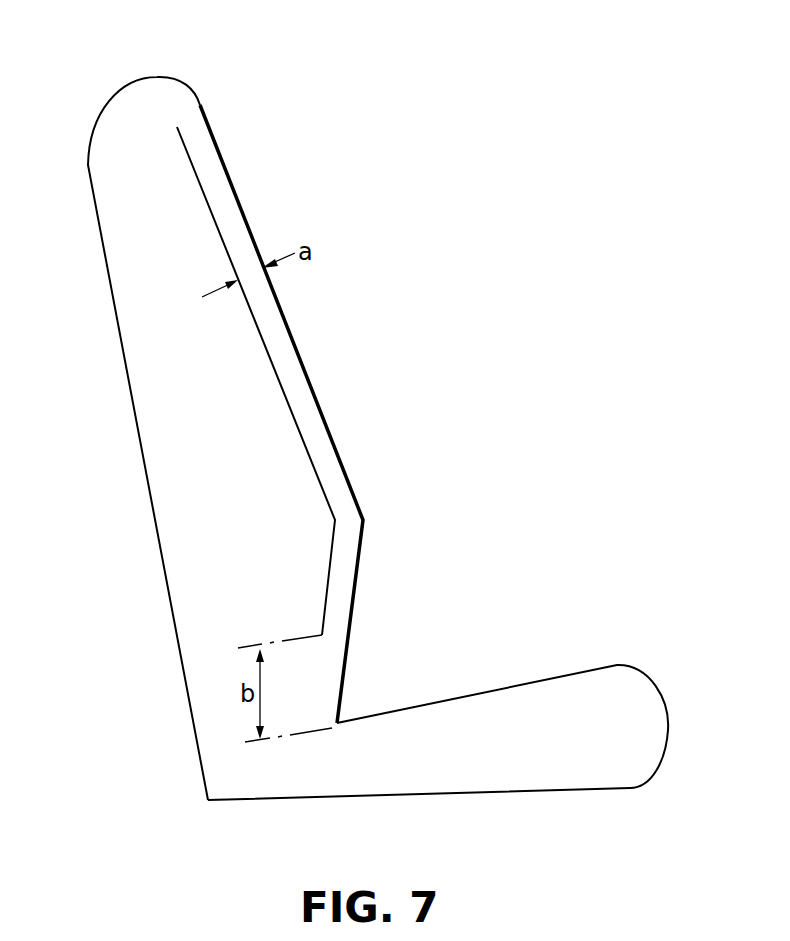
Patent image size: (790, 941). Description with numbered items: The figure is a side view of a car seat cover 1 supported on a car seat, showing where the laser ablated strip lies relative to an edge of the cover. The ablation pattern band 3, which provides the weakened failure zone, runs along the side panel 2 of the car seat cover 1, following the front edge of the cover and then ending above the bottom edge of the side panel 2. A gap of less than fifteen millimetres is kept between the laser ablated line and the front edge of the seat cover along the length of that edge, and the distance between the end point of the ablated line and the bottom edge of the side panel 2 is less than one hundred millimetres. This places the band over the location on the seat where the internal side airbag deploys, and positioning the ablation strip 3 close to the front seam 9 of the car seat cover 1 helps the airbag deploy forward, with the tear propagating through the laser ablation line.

The car seat cover 1 is at (370, 421).
The side panel 2 is at (120, 110).
The ablation pattern band 3 is at (197, 168).
The front seam 9 is at (343, 436).